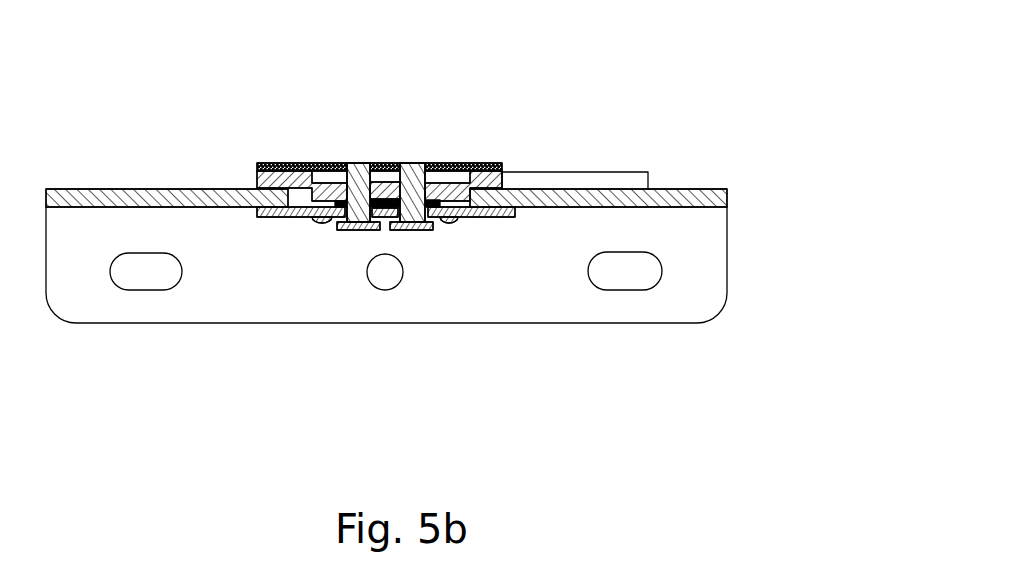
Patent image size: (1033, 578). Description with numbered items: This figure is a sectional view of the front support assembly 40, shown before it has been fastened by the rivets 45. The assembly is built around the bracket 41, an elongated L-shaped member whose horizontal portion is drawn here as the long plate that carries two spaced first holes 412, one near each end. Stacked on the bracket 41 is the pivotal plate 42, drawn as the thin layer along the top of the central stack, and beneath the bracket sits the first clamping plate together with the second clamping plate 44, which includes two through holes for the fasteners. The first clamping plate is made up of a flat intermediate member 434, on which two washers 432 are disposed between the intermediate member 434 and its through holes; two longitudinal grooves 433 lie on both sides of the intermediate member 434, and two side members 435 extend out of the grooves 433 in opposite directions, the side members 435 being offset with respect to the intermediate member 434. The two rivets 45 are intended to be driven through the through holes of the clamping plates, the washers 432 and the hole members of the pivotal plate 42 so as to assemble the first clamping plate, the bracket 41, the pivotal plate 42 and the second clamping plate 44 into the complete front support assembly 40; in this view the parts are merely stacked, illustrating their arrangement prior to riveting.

The front support assembly 40 is at (602, 95).
The bracket 41 is at (617, 203).
The first holes 412 is at (128, 278).
The pivotal plate 42 is at (275, 163).
The second clamping plate 44 is at (332, 163).
The washers 432 is at (383, 163).
The longitudinal grooves 433 is at (322, 224).
The flat intermediate member 434 is at (390, 230).
The side members 435 is at (273, 217).
The rivets 45 is at (352, 231).